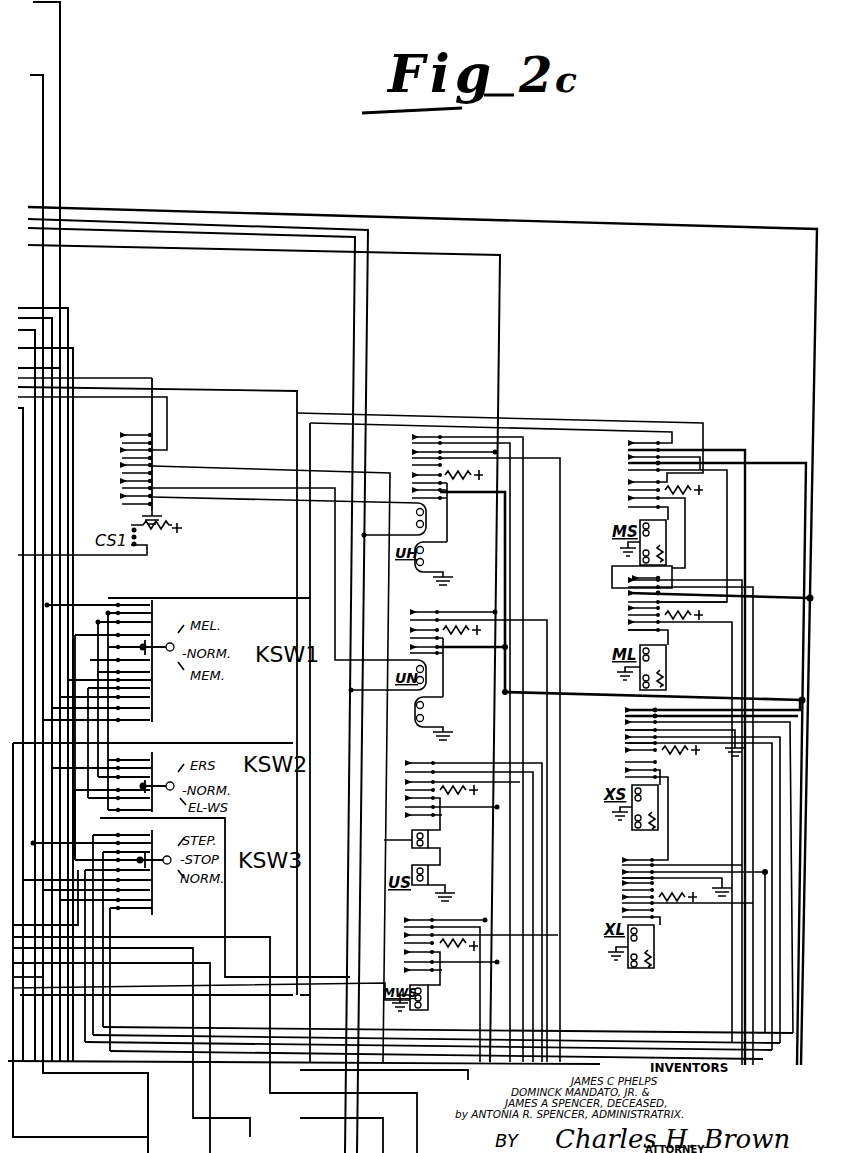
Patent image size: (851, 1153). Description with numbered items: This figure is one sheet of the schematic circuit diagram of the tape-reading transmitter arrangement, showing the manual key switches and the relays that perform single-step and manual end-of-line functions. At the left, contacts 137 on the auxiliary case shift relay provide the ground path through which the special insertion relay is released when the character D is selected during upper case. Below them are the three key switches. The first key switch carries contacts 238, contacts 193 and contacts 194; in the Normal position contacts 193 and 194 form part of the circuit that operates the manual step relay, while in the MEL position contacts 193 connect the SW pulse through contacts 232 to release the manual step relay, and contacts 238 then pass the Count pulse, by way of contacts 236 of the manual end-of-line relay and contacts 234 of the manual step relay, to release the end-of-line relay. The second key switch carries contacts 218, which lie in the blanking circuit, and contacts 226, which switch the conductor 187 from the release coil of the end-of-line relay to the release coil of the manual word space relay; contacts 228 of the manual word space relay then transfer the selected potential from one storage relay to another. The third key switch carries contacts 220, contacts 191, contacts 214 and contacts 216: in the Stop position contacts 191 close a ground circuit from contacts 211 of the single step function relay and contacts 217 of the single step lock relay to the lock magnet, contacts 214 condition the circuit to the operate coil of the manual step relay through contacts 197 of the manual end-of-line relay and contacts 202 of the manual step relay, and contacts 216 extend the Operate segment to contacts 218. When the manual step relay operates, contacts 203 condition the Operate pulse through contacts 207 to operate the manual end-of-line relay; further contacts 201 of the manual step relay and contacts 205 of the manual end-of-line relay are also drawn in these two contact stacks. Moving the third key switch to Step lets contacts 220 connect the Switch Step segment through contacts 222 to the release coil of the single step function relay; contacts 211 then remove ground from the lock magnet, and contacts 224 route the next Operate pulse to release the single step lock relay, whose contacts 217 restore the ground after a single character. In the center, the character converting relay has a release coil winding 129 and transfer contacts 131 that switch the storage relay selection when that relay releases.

The contacts on the Case Shift relay CS1 137 is at (123, 438).
The contacts of KSW1 238 is at (150, 614).
The contacts of KSW1 193 is at (152, 623).
The contacts of KSW1 194 is at (148, 678).
The contacts on the key switch KSW2 218 is at (150, 767).
The contacts on the key switch KSW2 226 is at (150, 806).
The conductor 187 is at (86, 806).
The contacts of KSW3 220 is at (150, 843).
The contacts of KSW3 191 is at (148, 872).
The contacts of KSW3 214 is at (152, 900).
The contacts of KSW3 216 is at (147, 911).
The transfer contacts 131 is at (406, 773).
The Release coil winding 129 is at (410, 838).
The contacts of the relay MWS 228 is at (406, 920).
The contacts of relay MS 234 is at (630, 443).
The contacts of relay MS 203 is at (630, 461).
The contacts of relay MS 232 is at (630, 477).
The relay contact 201 is at (630, 497).
The contacts of the relay MS 202 is at (630, 508).
The contacts of the Manual-End-of-Line relay ML 197 is at (614, 579).
The contacts of relay ML 236 is at (630, 594).
The relay contact 205 is at (630, 612).
The contacts 207 is at (630, 629).
The contacts of relay XS 224 is at (627, 711).
The contacts of Single Step function relay XS 211 is at (627, 731).
The contacts 222 is at (627, 745).
The contacts of relay XL 217 is at (625, 878).